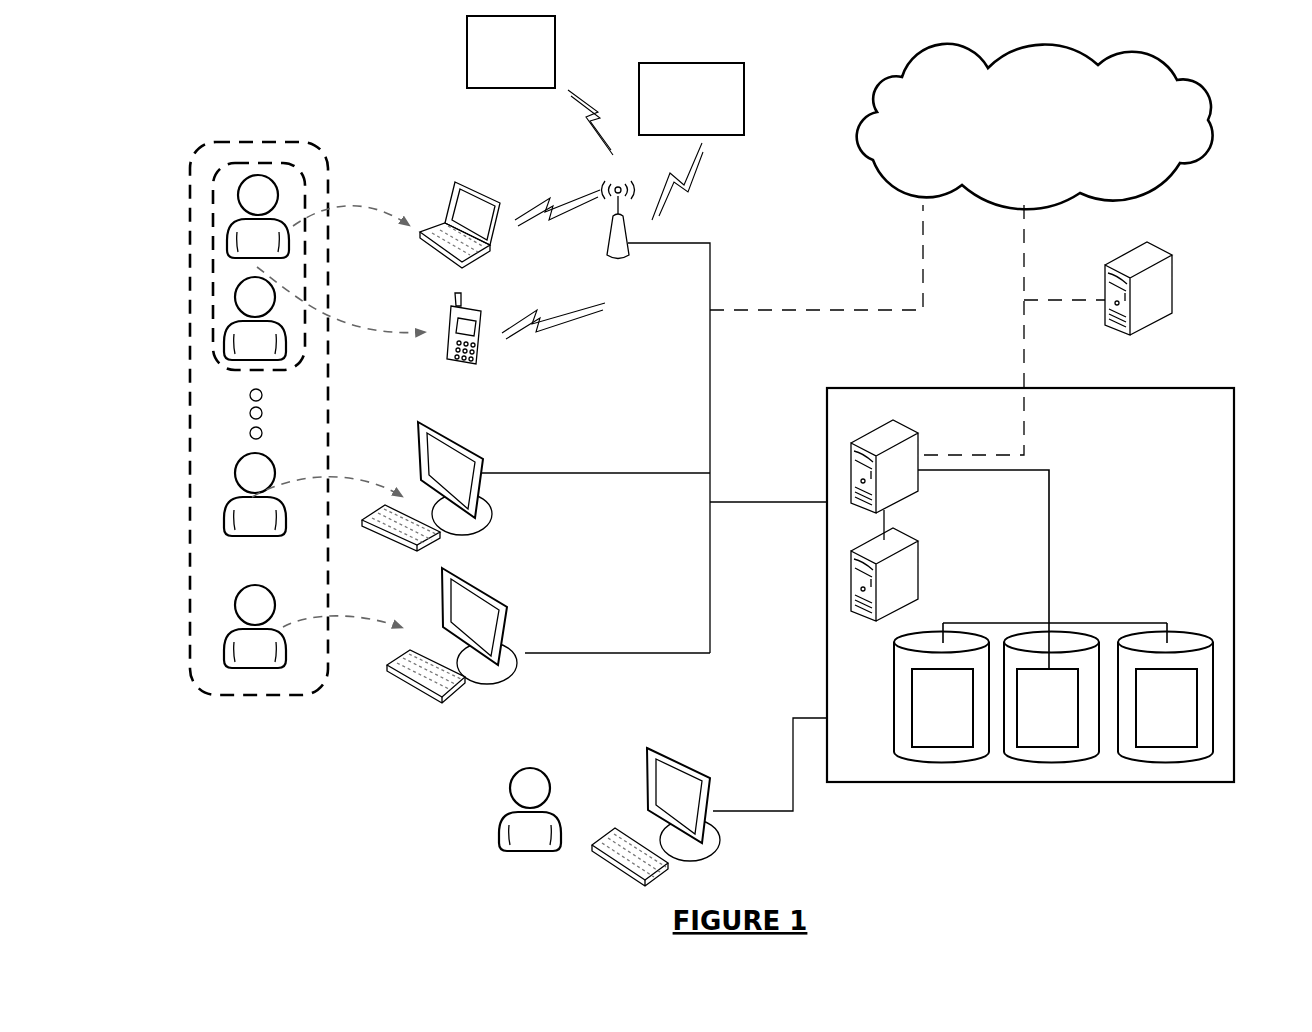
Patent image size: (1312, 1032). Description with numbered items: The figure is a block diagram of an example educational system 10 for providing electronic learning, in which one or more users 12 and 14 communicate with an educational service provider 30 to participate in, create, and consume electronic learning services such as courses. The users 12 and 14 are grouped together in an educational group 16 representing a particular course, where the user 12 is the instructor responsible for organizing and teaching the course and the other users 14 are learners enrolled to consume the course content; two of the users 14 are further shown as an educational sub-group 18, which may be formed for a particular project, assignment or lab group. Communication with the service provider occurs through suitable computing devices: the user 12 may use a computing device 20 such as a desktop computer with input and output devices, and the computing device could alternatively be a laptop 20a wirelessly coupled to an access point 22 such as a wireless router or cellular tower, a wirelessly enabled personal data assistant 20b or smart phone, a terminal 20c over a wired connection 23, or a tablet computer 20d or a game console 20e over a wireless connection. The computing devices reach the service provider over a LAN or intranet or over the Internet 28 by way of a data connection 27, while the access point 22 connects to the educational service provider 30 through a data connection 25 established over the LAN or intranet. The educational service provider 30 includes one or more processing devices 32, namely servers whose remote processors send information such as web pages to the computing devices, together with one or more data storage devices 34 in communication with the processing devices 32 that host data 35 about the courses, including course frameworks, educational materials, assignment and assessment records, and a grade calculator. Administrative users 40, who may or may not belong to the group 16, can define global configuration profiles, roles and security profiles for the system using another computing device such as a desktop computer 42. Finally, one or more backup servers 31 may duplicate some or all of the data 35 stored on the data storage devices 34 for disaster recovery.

The educational system 10 is at (335, 57).
The user 12 is at (222, 645).
The users 14 is at (228, 237).
The educational group 16 is at (190, 572).
The educational sub-group 18 is at (292, 163).
The computing device 20 is at (508, 612).
The laptop 20a is at (476, 185).
The personal data assistant (PDA) 20b is at (480, 298).
The terminal 20c is at (480, 518).
The tablet computer 20d is at (467, 48).
The game console 20e is at (695, 63).
The access point 22 is at (618, 260).
The wired connection 23 is at (595, 475).
The data connection 25 is at (787, 503).
The data connection 27 is at (850, 308).
The Internet 28 is at (862, 112).
The educational service provider 30 is at (850, 388).
The backup servers 31 is at (1148, 262).
The processing devices 32 is at (908, 438).
The data storage devices 34 is at (1065, 632).
The data 35 is at (1197, 707).
The users 40 is at (498, 800).
The desktop computer 42 is at (725, 833).